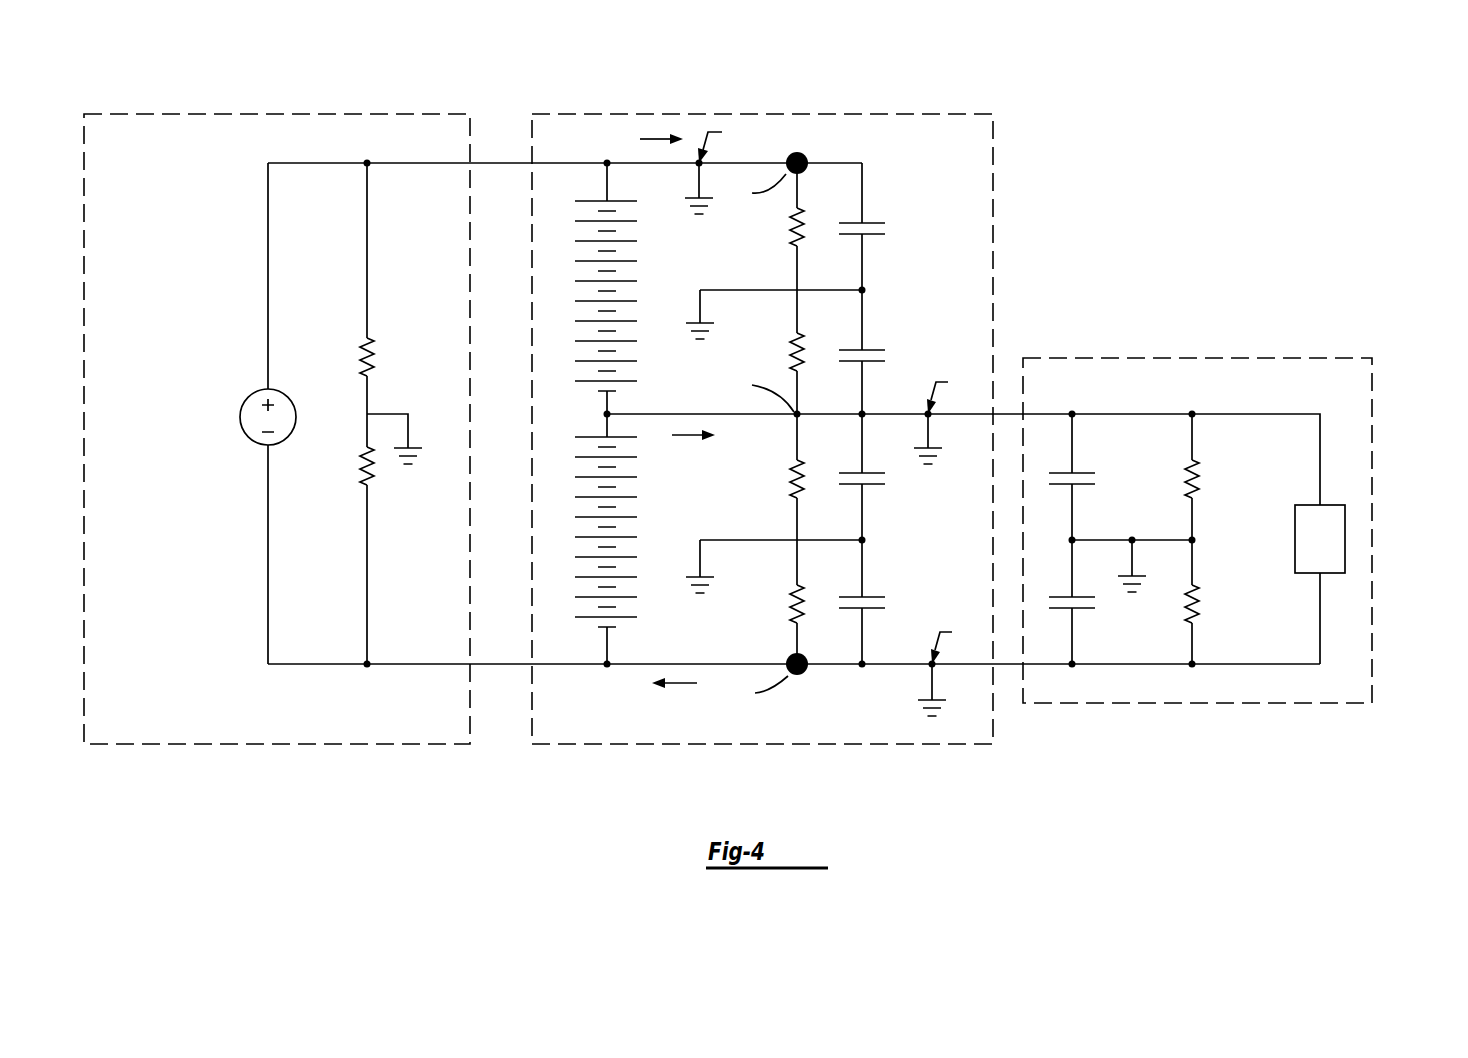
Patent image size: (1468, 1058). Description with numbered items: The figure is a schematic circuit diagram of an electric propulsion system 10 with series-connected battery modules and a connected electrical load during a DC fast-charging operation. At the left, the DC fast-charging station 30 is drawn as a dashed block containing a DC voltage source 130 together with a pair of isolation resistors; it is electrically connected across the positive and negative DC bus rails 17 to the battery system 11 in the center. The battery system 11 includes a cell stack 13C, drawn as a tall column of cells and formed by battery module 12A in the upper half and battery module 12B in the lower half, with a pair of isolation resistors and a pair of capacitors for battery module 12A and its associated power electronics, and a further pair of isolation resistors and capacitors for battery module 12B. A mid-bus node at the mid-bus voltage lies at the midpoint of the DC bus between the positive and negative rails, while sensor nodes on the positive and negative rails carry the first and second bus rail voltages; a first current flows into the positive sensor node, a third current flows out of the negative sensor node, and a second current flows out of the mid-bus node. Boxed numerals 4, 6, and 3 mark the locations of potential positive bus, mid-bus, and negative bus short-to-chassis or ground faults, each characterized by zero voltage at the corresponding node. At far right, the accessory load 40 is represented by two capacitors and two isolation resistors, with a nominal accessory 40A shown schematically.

The electric propulsion system 10 is at (1125, 82).
The battery system 11 is at (993, 218).
The battery module 12A is at (626, 252).
The battery module 12B is at (626, 488).
The cell stack 13C is at (557, 318).
The positive and negative DC bus rails 17 is at (500, 163).
The DCFC station 30 is at (272, 744).
The DC voltage source 130 is at (240, 417).
The accessory load 40 is at (1372, 552).
The nominal accessory 40A is at (1295, 540).
The positive bus short-to-ground fault location 4 is at (715, 165).
The mid-bus short-to-ground fault location 6 is at (943, 416).
The negative bus short-to-ground fault location 3 is at (947, 667).